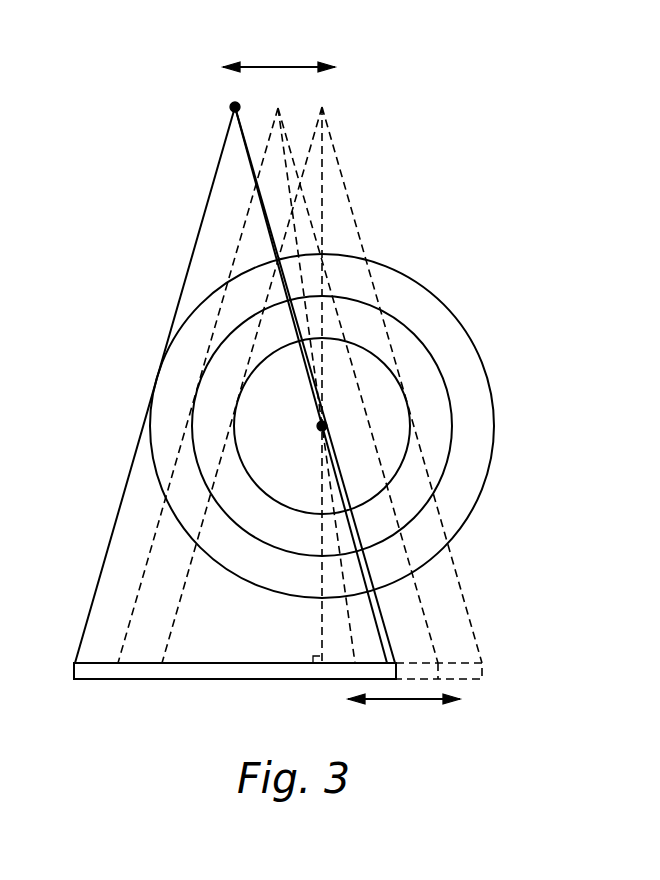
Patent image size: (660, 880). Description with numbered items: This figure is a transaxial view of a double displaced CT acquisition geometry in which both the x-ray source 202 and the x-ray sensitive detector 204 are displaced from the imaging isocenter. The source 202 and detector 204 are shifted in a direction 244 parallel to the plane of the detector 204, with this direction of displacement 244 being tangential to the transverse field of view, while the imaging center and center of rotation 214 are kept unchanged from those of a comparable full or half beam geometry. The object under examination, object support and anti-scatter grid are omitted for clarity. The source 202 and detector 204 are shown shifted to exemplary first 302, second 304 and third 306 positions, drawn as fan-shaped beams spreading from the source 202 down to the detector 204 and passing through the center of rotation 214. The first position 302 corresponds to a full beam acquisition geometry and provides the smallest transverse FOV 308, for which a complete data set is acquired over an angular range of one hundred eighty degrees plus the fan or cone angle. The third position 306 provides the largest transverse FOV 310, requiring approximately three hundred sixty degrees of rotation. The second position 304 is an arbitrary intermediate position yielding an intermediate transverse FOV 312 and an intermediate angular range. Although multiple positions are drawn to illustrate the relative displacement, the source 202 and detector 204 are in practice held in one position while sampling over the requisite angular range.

The x-ray source 202 is at (231, 105).
The x-ray sensitive detector 204 is at (187, 672).
The center of rotation 214 is at (314, 425).
The direction of displacement 244 is at (280, 67).
The first position 302 is at (342, 176).
The second position 304 is at (245, 222).
The third position 306 is at (185, 277).
The smallest transverse FOV 308 is at (368, 345).
The largest transverse FOV 310 is at (495, 425).
The intermediate transverse FOV 312 is at (450, 455).